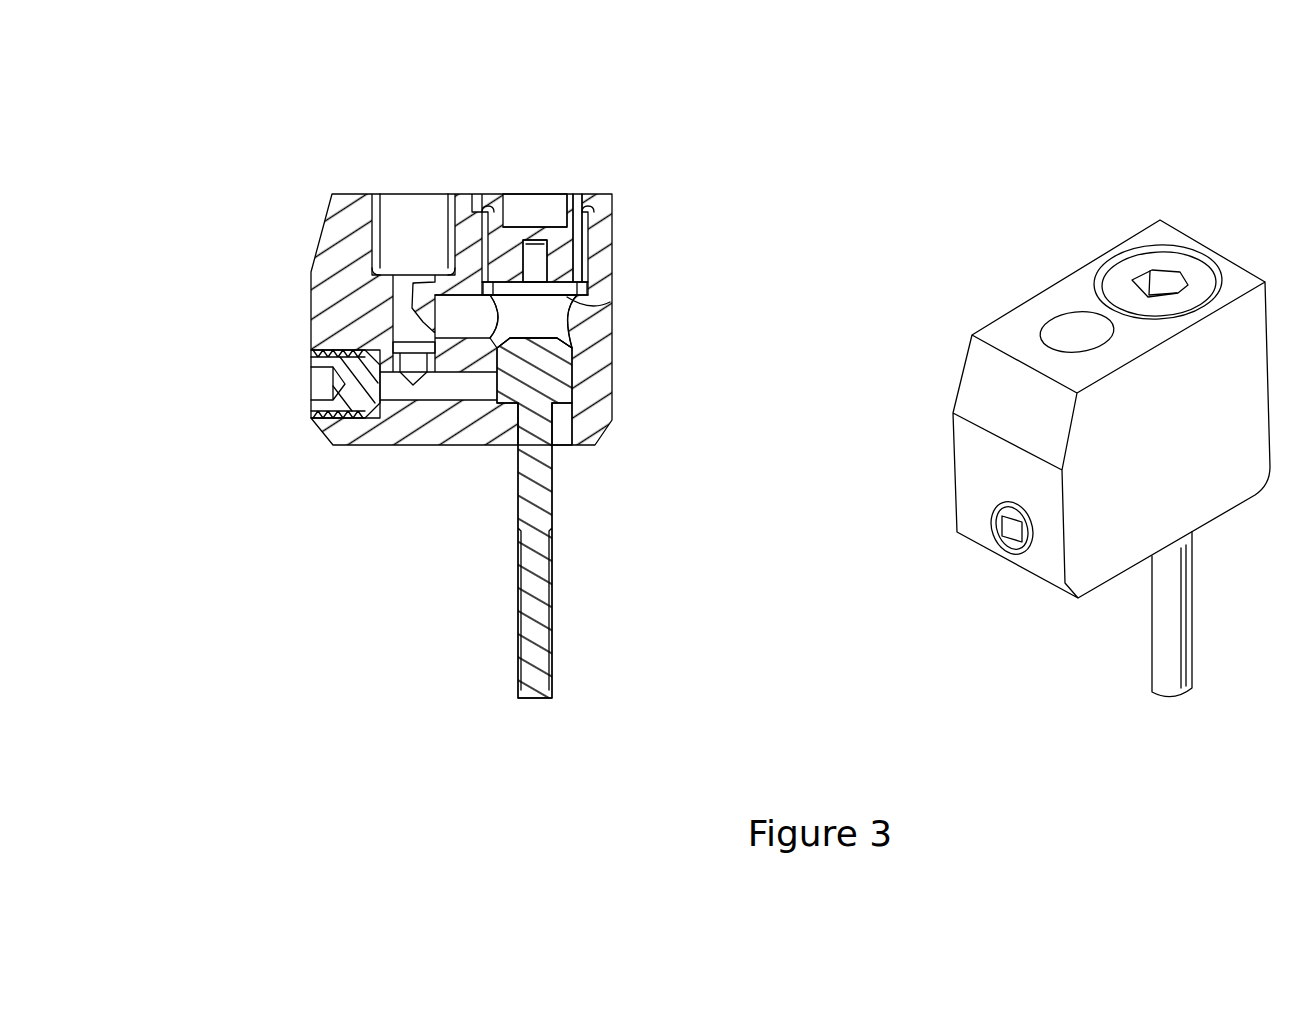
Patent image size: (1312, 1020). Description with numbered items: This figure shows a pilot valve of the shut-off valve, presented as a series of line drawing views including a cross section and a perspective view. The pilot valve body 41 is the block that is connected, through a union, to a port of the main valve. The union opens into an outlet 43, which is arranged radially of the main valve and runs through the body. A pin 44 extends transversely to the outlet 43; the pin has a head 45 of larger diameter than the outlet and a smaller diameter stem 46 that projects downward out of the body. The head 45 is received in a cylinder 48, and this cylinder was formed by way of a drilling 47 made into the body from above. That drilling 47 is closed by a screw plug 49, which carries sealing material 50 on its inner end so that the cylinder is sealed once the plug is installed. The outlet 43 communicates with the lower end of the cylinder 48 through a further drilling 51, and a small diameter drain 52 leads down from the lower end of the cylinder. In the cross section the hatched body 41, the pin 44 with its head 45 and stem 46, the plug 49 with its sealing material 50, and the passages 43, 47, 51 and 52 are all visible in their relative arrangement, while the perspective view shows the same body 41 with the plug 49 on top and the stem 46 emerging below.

The pilot valve body 41 is at (323, 307).
The outlet 43 is at (597, 328).
The pin 44 is at (452, 597).
The head 45 is at (562, 385).
The stem 46 is at (532, 658).
The drilling 47 is at (603, 235).
The cylinder 48 is at (573, 363).
The screw plug 49 is at (500, 232).
The sealing material 50 is at (592, 300).
The drilling 51 is at (425, 390).
The drain 52 is at (580, 445).